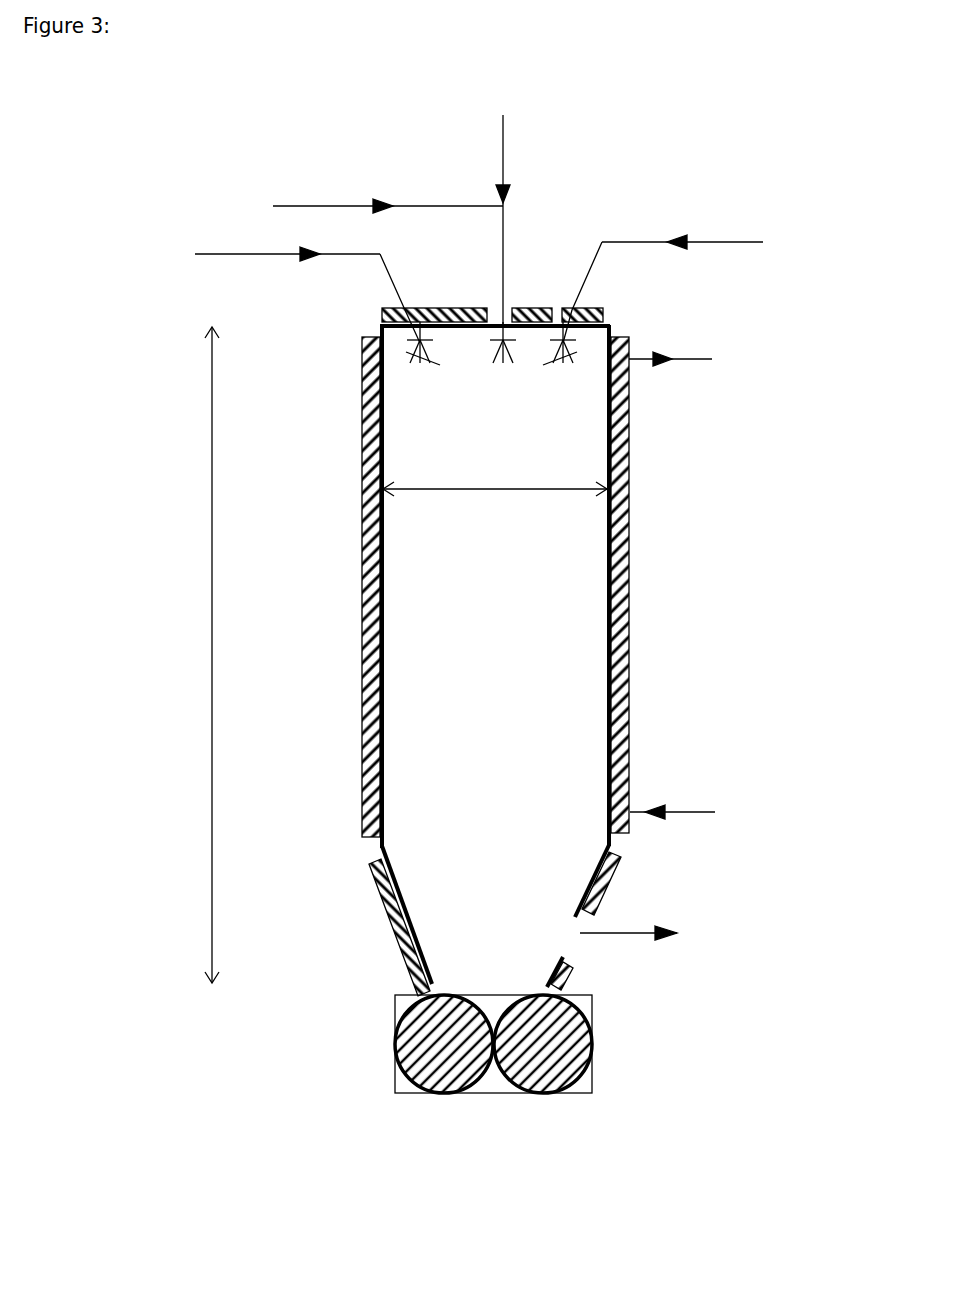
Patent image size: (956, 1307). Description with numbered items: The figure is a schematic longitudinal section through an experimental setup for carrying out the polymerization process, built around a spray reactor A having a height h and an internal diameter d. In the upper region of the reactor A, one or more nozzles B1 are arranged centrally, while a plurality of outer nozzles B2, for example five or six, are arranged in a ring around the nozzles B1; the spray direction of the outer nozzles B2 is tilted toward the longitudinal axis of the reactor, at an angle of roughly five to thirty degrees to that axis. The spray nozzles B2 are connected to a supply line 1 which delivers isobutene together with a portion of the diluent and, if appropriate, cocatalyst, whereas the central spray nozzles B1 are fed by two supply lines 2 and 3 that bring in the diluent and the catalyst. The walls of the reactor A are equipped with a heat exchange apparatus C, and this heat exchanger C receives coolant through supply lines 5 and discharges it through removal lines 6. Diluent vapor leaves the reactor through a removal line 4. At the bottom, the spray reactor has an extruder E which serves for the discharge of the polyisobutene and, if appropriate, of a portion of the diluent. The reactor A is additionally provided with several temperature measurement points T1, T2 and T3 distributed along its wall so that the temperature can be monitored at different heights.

The supply line 1 is at (487, 282).
The supply line 2 is at (388, 186).
The supply line 3 is at (487, 220).
The removal line 4 is at (651, 949).
The supply line 5 is at (672, 790).
The removal line 6 is at (670, 382).
The spray reactor A is at (478, 575).
The nozzle B1 is at (512, 362).
The outer nozzle B2 is at (492, 369).
The heat exchange apparatus C is at (628, 537).
The extruder E is at (427, 1047).
The temperature measurement point T1 is at (420, 438).
The temperature measurement point T2 is at (418, 862).
The temperature measurement point T3 is at (430, 900).
The height h is at (228, 655).
The internal diameter d is at (495, 472).